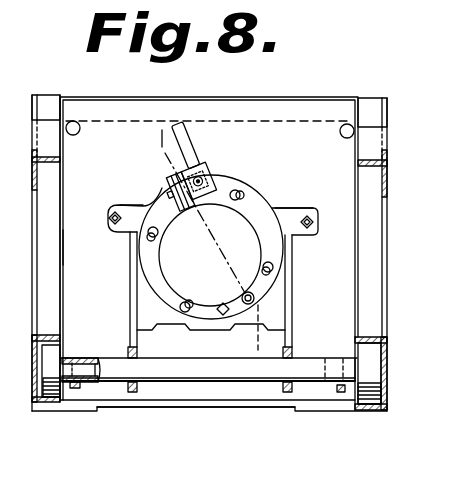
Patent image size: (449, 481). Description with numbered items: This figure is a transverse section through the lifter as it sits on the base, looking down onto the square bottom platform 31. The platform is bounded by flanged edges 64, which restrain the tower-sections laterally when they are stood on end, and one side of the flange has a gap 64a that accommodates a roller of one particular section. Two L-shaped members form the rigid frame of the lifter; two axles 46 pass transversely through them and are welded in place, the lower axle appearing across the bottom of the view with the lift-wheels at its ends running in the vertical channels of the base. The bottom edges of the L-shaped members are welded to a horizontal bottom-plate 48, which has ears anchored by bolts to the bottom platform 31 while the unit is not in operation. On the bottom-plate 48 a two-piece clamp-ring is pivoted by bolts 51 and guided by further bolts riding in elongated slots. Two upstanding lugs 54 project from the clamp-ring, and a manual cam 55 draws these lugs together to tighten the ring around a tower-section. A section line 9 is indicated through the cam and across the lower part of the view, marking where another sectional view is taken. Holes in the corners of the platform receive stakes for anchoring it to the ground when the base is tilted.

The section line 9- 9 is at (160, 133).
The bottom platform 31 is at (187, 393).
The axles 46 is at (258, 385).
The bottom-plate 48 is at (272, 300).
The pivot bolts 51 is at (244, 294).
The upstanding lugs 54 is at (185, 208).
The manual cam 55 is at (188, 145).
The flanged edges 64 is at (297, 75).
The gap in flange 64a is at (65, 247).